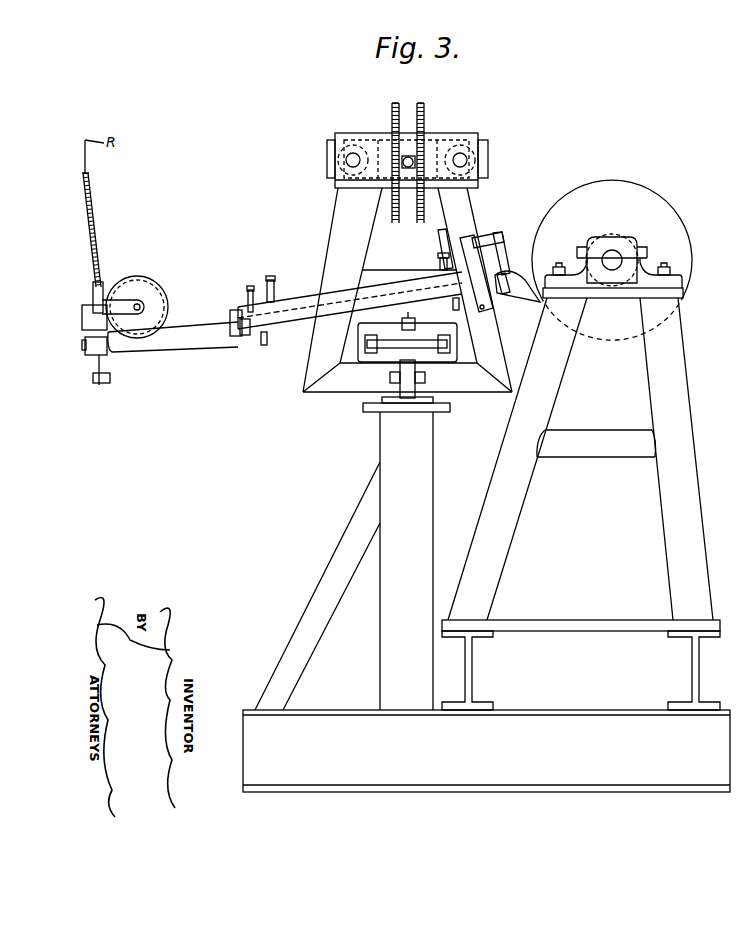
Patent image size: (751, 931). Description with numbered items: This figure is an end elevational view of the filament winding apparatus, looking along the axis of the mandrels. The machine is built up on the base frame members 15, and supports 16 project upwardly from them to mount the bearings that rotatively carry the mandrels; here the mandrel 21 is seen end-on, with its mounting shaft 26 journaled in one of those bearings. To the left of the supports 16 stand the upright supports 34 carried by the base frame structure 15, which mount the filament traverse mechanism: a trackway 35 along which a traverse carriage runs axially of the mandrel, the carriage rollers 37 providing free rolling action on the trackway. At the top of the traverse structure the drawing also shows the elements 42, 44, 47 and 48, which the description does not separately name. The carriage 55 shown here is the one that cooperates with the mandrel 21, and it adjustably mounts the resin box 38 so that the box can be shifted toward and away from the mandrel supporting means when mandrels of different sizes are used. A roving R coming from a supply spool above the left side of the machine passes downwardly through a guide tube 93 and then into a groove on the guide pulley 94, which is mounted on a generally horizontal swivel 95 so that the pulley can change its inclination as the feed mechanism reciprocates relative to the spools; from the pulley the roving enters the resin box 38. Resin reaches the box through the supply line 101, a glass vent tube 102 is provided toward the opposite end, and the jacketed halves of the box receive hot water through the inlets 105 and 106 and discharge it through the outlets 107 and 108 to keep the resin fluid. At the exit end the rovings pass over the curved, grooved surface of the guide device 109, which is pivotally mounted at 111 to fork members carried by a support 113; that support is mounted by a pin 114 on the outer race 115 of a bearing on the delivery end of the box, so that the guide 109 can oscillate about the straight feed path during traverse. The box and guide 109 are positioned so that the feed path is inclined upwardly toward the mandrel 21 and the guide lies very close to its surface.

The base frame members 15 is at (555, 710).
The supports 16 is at (690, 500).
The mandrel 21 is at (610, 182).
The mounting shaft 26 is at (612, 262).
The upright supports 34 is at (387, 457).
The trackway 35 is at (390, 347).
The carriage rollers 37 is at (372, 348).
The resin box 38 is at (308, 284).
The threaded rods 42 is at (420, 100).
The rods 44 is at (392, 115).
The nut 47 is at (427, 137).
The block 48 is at (327, 153).
The carriage 55 is at (180, 347).
The guide tube 93 is at (93, 222).
The guide pulley 94 is at (152, 290).
The swivel 95 is at (88, 360).
The supply line 101 is at (252, 288).
The vent tube 102 is at (448, 237).
The inlet 105 is at (270, 278).
The inlet 106 is at (265, 345).
The outlet 107 is at (425, 258).
The outlet 108 is at (453, 303).
The guide device 109 is at (520, 295).
The pivotal mounting 111 is at (507, 292).
The support 113 is at (506, 250).
The pin 114 is at (490, 235).
The outer race 115 is at (472, 240).